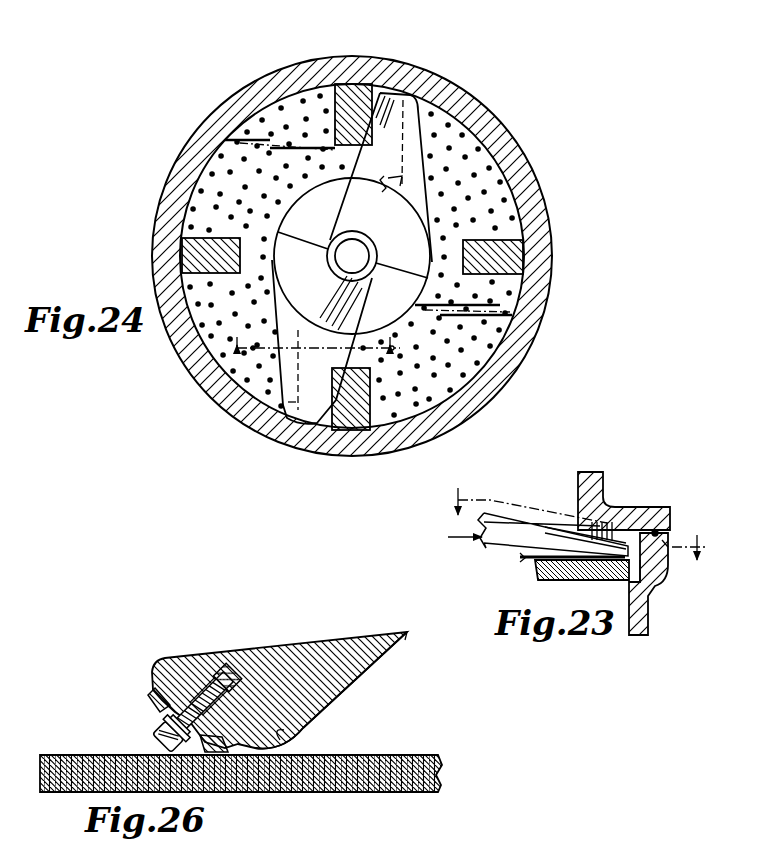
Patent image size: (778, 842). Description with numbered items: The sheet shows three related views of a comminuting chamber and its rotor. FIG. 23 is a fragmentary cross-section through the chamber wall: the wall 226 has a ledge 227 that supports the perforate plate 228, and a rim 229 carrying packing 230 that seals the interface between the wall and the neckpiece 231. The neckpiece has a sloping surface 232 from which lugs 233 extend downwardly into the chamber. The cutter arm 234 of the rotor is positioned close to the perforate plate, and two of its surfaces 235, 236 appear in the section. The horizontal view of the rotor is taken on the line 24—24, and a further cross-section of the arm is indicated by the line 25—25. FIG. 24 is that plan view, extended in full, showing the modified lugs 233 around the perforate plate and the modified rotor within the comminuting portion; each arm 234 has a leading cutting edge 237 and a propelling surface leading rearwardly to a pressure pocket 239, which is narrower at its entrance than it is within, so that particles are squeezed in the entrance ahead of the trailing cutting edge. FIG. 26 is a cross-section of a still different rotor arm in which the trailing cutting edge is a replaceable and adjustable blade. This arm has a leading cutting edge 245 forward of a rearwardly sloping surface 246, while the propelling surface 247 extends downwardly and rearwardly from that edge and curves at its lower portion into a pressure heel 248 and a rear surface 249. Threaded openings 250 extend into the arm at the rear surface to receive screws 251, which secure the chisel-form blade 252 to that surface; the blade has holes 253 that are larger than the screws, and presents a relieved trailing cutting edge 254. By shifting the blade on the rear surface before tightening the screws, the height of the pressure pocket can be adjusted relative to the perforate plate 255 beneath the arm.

In FIG. 23, the section line 24 is at (576, 527).
In FIG. 24, the section line 25 is at (314, 361).
In FIG. 24, the wall 226 is at (497, 138).
In FIG. 23, the wall 226 is at (648, 612).
In FIG. 23, the ledge 227 is at (634, 588).
In FIG. 24, the perforate plate 228 is at (492, 185).
In FIG. 23, the perforate plate 228 is at (577, 580).
In FIG. 23, the rim 229 is at (660, 547).
In FIG. 23, the packing 230 is at (656, 531).
In FIG. 23, the neckpiece 231 is at (607, 477).
In FIG. 23, the sloping surface 232 is at (606, 522).
In FIG. 24, the lugs 233 is at (348, 92).
In FIG. 23, the lugs 233 is at (577, 523).
In FIG. 24, the cutter arm 234 is at (352, 256).
In FIG. 23, the arm surface 235 is at (542, 556).
In FIG. 24, the arm surface 236 is at (413, 118).
In FIG. 23, the arm surface 236 is at (510, 520).
In FIG. 24, the leading cutting edge 237 is at (350, 192).
In FIG. 23, the pressure pocket 239 is at (447, 537).
In FIG. 26, the leading cutting edge 245 is at (406, 634).
In FIG. 26, the rearwardly sloping surface 246 is at (333, 638).
In FIG. 26, the propelling surface 247 is at (345, 687).
In FIG. 26, the pressure heel 248 is at (304, 730).
In FIG. 26, the rear surface 249 is at (184, 700).
In FIG. 26, the threaded openings 250 is at (236, 673).
In FIG. 26, the screws 251 is at (196, 700).
In FIG. 26, the blade 252 is at (152, 697).
In FIG. 26, the holes 253 is at (162, 713).
In FIG. 26, the relieved trailing cutting edge 254 is at (233, 752).
In FIG. 26, the perforate plate 255 is at (402, 755).